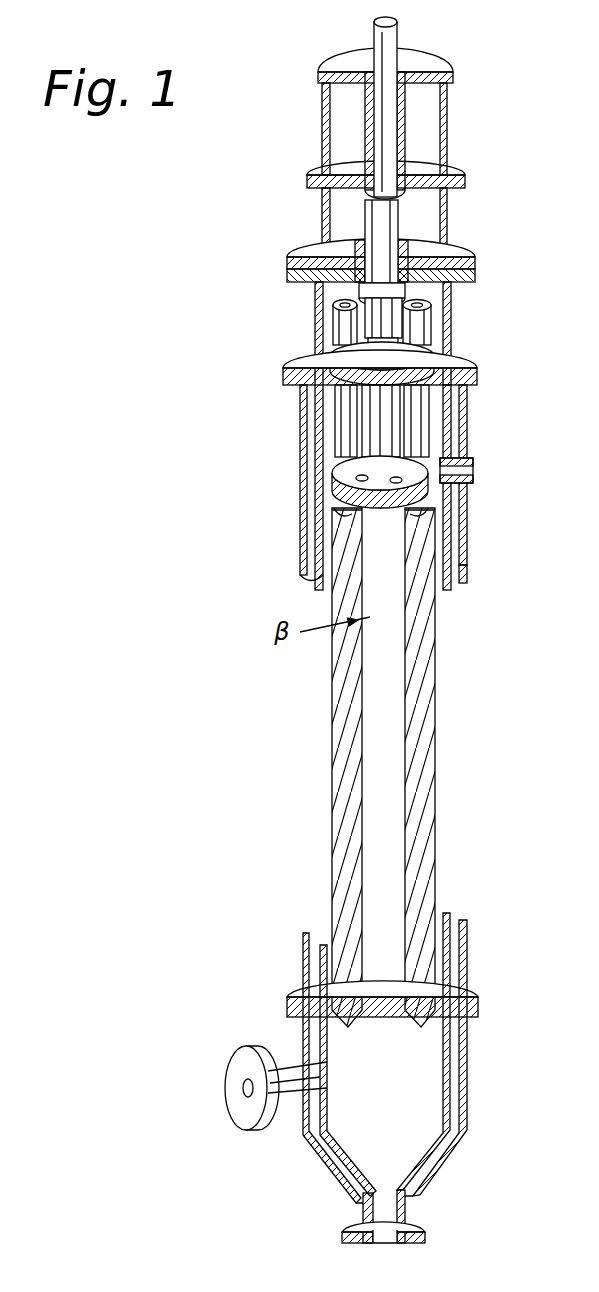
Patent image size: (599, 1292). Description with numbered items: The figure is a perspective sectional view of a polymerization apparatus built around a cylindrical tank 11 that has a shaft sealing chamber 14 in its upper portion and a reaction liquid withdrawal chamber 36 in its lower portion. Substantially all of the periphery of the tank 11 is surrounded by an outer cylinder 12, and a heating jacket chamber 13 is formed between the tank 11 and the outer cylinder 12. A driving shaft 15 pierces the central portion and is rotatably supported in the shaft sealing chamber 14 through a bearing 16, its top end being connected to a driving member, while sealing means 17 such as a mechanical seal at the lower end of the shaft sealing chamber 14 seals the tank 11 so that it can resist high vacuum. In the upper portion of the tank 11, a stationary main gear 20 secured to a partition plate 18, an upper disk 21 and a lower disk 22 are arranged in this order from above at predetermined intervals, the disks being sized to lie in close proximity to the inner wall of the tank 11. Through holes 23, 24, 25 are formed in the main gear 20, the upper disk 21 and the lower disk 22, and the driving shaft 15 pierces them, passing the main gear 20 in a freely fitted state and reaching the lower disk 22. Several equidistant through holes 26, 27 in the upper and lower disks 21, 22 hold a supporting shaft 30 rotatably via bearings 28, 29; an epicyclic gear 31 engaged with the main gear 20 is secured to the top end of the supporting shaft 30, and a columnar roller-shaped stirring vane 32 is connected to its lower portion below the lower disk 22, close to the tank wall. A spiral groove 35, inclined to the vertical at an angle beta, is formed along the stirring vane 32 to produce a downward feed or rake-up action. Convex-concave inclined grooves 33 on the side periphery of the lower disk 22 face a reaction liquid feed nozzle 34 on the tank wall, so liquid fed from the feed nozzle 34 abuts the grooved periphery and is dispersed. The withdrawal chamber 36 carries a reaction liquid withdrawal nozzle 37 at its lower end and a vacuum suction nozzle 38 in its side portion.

The cylindrical tank 11 is at (375, 767).
The outer cylinder 12 is at (462, 577).
The heating jacket chamber 13 is at (467, 552).
The shaft sealing chamber 14 is at (425, 138).
The driving shaft 15 is at (382, 116).
The bearing 16 is at (428, 52).
The sealing means 17 is at (448, 229).
The partition plate 18 is at (313, 243).
The stationary main gear 20 is at (403, 292).
The upper disk 21 is at (434, 357).
The lower disk 22 is at (462, 432).
The through hole 23 is at (340, 290).
The through hole 24 is at (345, 418).
The through hole 25 is at (335, 500).
The through hole 26 is at (318, 393).
The through hole 27 is at (345, 520).
The bearing 28 is at (432, 324).
The bearing 29 is at (467, 511).
The supporting shaft 30 is at (428, 408).
The epicyclic gear 31 is at (333, 333).
The stirring vane 32 is at (336, 755).
The inclined grooves 33 is at (325, 585).
The reaction liquid feed nozzle 34 is at (473, 470).
The spiral groove 35 is at (427, 818).
The withdrawal chamber 36 is at (410, 1098).
The reaction liquid withdrawal nozzle 37 is at (395, 1232).
The vacuum suction nozzle 38 is at (288, 1063).